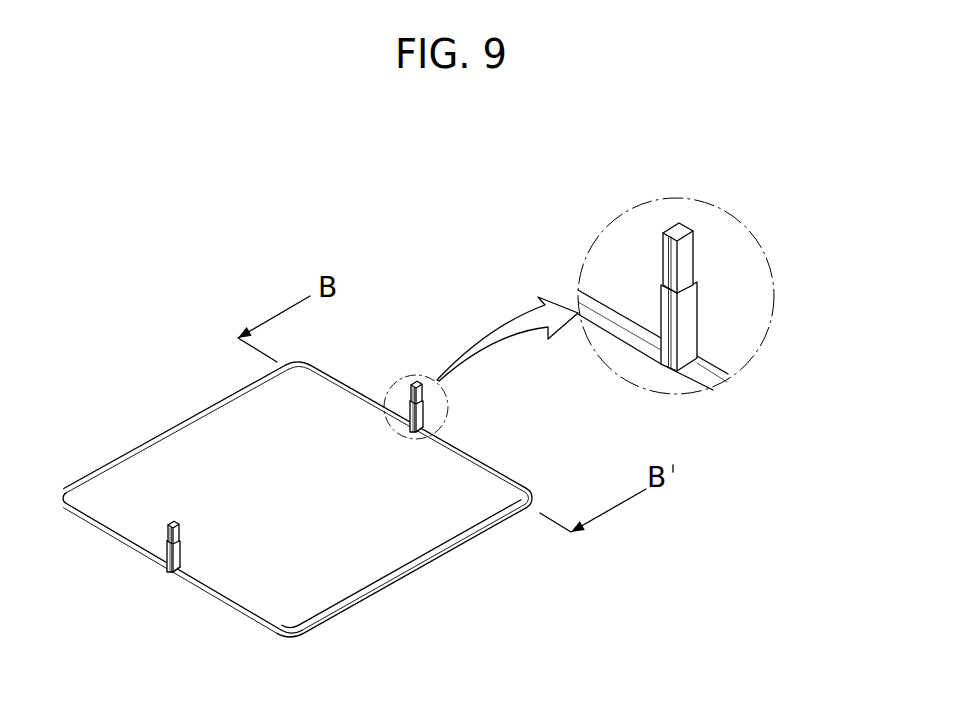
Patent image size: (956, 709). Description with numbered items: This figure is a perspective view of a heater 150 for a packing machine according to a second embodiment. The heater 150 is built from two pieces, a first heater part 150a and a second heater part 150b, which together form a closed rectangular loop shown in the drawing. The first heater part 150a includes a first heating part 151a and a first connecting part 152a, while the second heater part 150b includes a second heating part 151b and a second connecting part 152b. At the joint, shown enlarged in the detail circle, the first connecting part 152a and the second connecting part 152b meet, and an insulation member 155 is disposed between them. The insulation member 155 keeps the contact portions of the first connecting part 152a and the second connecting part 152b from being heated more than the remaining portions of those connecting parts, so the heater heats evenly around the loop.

The heater 150 is at (297, 447).
The first heater part 150a is at (170, 406).
The second heater part 150b is at (420, 594).
The first heating part 151a is at (590, 300).
The second heating part 151b is at (712, 374).
The first connecting part 152a is at (658, 285).
The second connecting part 152b is at (692, 305).
The insulation member 155 is at (672, 371).